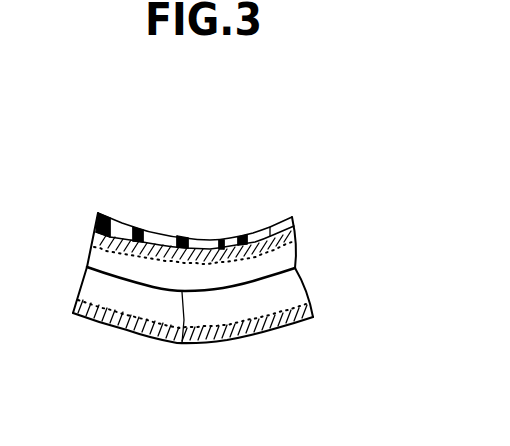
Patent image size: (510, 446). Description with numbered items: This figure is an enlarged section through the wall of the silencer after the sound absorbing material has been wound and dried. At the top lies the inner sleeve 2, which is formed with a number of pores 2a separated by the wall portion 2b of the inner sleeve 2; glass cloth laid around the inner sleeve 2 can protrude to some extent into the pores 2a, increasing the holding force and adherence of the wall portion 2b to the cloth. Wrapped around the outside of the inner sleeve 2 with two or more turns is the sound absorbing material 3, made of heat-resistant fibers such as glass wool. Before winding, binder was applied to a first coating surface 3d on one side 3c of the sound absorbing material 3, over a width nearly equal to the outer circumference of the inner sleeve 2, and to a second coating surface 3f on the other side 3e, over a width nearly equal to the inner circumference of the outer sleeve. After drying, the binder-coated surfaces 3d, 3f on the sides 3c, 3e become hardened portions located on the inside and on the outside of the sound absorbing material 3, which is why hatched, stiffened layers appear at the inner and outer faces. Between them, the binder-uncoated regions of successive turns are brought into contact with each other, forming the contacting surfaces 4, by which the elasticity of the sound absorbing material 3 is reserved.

The inner sleeve 2 is at (127, 226).
The pores 2a is at (180, 237).
The wall portion 2b is at (100, 214).
The sound absorbing material 3 is at (283, 292).
The one side 3c is at (223, 285).
The first coating surface 3d is at (257, 230).
The other side 3e is at (146, 288).
The second coating surface 3f is at (227, 340).
The contacting surfaces 4 is at (182, 343).